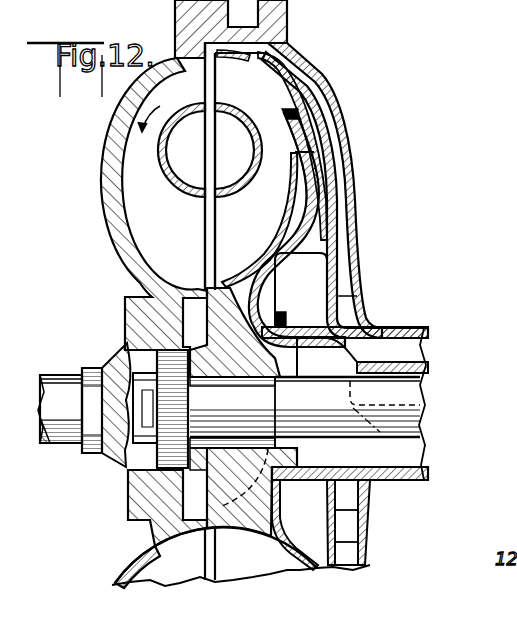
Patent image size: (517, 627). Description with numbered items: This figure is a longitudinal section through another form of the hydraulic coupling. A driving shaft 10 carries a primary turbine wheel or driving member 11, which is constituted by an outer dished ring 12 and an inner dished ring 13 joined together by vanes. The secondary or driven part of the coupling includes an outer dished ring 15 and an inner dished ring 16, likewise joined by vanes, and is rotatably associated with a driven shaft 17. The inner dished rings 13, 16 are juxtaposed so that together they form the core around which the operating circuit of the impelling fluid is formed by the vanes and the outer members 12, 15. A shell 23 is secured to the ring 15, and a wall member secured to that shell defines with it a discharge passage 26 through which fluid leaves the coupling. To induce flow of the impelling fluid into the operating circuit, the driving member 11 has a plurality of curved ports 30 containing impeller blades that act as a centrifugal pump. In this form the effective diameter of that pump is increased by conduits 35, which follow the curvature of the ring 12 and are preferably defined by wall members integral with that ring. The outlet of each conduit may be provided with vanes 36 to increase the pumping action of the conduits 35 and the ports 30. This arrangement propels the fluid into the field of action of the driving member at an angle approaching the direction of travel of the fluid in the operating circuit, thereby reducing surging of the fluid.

The driving shaft 10 is at (410, 391).
The primary turbine wheel or driving member 11 is at (251, 167).
The outer dished ring 12 is at (266, 70).
The inner dished ring 13 is at (233, 127).
The dished ring 15 is at (101, 167).
The dished ring 16 is at (170, 180).
The driven shaft 17 is at (77, 443).
The shell 23 is at (330, 88).
The discharge passage 26 is at (343, 221).
The curved ports 30 is at (309, 332).
The conduits 35 is at (292, 226).
The vanes 36 is at (283, 112).